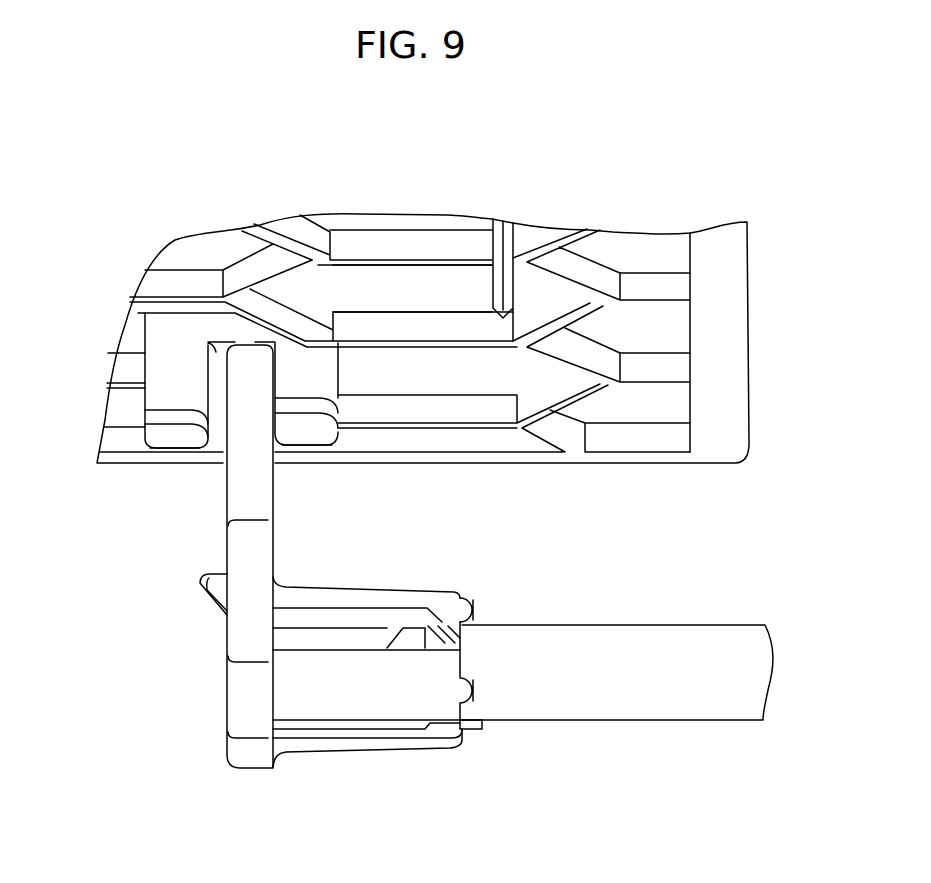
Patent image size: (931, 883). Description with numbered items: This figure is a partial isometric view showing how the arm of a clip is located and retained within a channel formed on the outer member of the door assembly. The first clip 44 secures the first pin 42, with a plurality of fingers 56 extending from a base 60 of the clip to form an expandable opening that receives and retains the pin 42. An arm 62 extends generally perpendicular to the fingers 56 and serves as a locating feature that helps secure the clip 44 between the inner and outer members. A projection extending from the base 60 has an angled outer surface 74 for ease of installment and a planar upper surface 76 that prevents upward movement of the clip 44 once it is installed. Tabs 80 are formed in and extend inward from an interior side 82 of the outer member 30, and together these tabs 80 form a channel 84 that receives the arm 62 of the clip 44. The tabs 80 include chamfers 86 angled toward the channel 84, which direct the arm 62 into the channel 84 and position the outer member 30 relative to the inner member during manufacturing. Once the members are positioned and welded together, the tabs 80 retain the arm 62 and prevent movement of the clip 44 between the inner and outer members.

The outer member 30 is at (448, 216).
The interior side 82 is at (437, 304).
The channel 84 is at (218, 342).
The tabs 80 is at (142, 432).
The chamfers 86 is at (200, 446).
The first clip 44 is at (294, 588).
The base 60 is at (227, 718).
The arm 62 is at (227, 509).
The planar upper surface 76 is at (205, 574).
The angled outer surface 74 is at (209, 603).
The fingers 56 is at (388, 591).
The first pin 42 is at (713, 625).